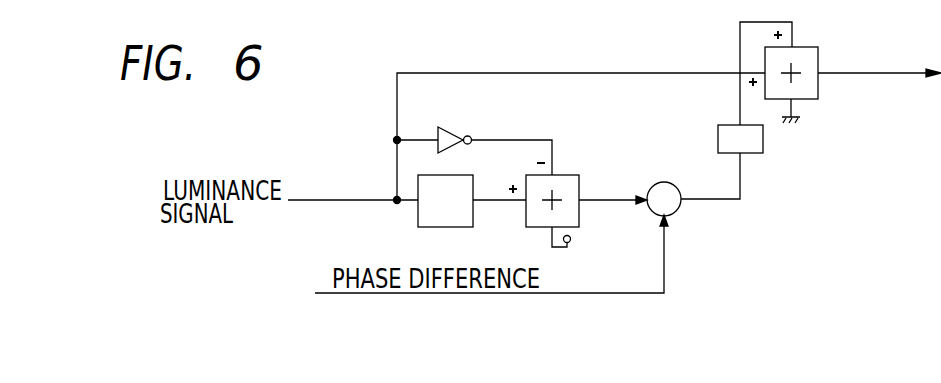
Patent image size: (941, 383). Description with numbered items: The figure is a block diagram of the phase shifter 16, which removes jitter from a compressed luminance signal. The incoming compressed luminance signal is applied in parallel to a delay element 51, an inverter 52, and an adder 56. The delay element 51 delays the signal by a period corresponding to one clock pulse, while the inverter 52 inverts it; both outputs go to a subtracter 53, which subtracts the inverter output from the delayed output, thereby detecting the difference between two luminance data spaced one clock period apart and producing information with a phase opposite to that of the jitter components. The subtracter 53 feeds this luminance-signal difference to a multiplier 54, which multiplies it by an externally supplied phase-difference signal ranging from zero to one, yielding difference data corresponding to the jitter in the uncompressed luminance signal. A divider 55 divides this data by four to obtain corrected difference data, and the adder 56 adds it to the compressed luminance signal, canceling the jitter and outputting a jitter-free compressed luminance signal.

The phase shifter 16 is at (474, 57).
The delay element 51 is at (466, 175).
The inverter 52 is at (447, 127).
The subtracter 53 is at (562, 175).
The multiplier 54 is at (679, 176).
The divider 55 is at (724, 125).
The adder 56 is at (800, 46).